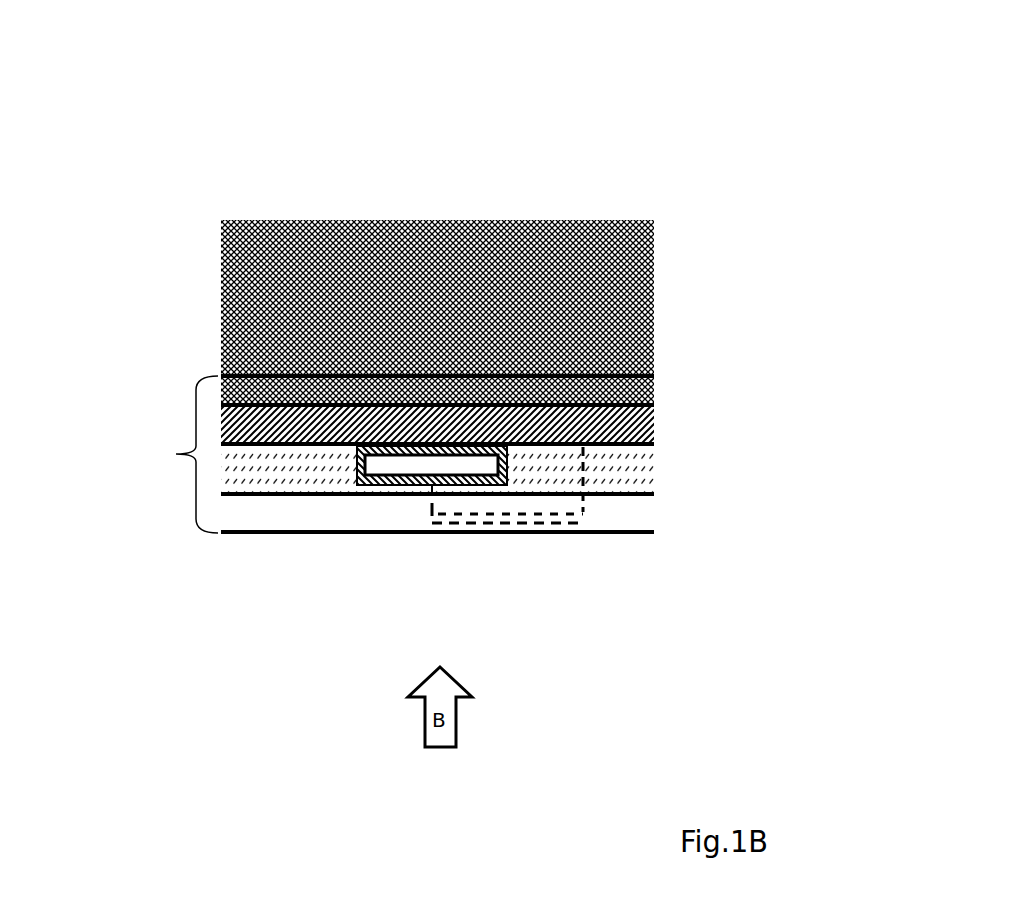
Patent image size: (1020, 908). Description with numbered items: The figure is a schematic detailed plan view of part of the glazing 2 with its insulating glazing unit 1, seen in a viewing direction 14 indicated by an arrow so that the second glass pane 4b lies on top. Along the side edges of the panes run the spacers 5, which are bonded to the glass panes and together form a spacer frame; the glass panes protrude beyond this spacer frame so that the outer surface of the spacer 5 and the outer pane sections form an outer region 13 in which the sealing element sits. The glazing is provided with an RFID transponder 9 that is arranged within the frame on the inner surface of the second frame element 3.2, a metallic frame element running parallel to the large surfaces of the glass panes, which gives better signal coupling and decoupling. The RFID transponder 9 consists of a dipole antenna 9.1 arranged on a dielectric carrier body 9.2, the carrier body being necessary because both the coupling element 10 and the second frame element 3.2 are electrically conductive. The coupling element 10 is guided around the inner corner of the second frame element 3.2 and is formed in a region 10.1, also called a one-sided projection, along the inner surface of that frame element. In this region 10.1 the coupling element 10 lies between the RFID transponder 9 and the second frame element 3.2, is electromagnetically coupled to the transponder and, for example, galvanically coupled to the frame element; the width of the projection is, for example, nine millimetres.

The insulating glazing unit 1 is at (646, 206).
The glazing 2 is at (200, 139).
The second glass pane 4b is at (253, 318).
The second frame element 3.2 is at (169, 454).
The spacer 5 is at (641, 431).
The outer region 13 is at (646, 473).
The RFID transponder 9 is at (299, 539).
The dipole antenna 9.1 is at (432, 465).
The dielectric carrier body 9.2 is at (357, 465).
The coupling element 10 is at (515, 523).
The region of the coupling element (one-sided projection) 10.1 is at (580, 490).
The viewing direction 14 is at (407, 558).